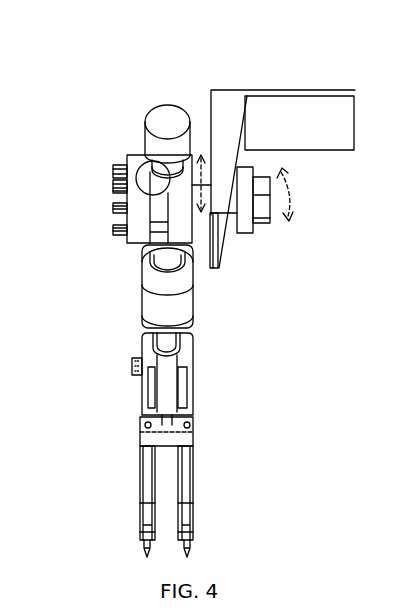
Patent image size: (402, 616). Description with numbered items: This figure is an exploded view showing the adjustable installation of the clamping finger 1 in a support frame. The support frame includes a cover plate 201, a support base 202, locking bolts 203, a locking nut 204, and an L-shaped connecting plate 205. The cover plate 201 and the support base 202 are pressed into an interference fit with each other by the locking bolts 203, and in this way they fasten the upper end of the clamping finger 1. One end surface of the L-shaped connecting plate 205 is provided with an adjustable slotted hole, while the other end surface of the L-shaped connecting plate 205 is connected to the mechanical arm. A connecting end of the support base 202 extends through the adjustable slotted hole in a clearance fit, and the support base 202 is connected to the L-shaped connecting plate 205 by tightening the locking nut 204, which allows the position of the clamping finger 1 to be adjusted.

The clamping finger 1 is at (168, 313).
The cover plate 201 is at (135, 220).
The support base 202 is at (175, 215).
The locking bolt 203 is at (119, 172).
The locking nut 204 is at (247, 193).
The L-shaped connecting plate 205 is at (275, 120).